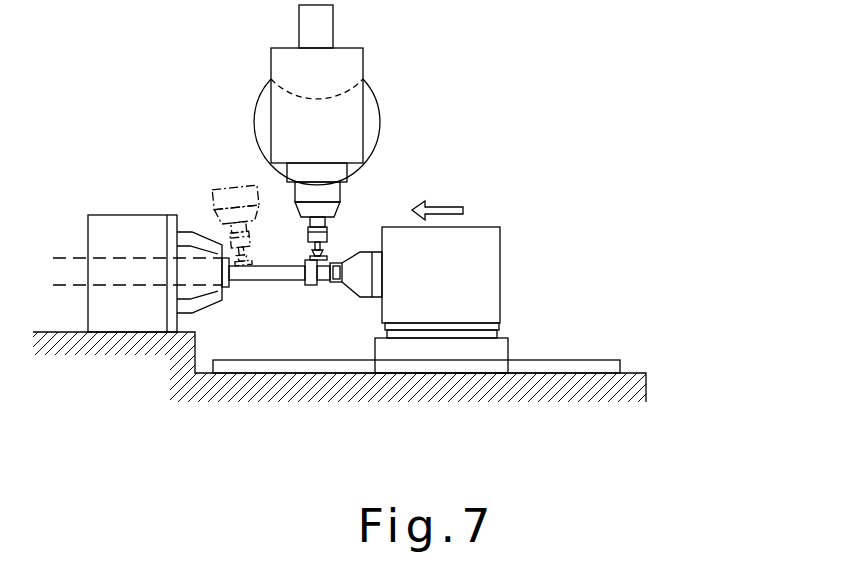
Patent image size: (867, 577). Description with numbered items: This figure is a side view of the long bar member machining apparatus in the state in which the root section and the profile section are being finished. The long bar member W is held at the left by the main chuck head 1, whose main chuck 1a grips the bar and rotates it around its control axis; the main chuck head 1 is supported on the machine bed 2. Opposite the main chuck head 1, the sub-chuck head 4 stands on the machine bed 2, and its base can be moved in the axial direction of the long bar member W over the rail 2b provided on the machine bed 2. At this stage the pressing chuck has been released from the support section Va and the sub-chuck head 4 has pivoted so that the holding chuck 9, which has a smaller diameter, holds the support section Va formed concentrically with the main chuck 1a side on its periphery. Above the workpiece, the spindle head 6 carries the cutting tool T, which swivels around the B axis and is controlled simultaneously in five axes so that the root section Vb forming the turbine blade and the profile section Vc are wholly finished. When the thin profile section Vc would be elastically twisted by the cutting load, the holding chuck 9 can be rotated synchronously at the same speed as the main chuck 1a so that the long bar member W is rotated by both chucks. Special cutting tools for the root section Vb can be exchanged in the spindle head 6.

The main chuck head 1 is at (132, 227).
The main chuck 1a is at (195, 293).
The long bar member W is at (248, 313).
The cutting tool T is at (330, 243).
The spindle head 6 is at (355, 108).
The sub-chuck head 4 is at (476, 240).
The holding chuck 9 is at (345, 287).
The rail 2b is at (580, 370).
The machine bed 2 is at (635, 389).
The support section Va is at (338, 285).
The root section Vb is at (312, 285).
The profile section Vc is at (257, 280).